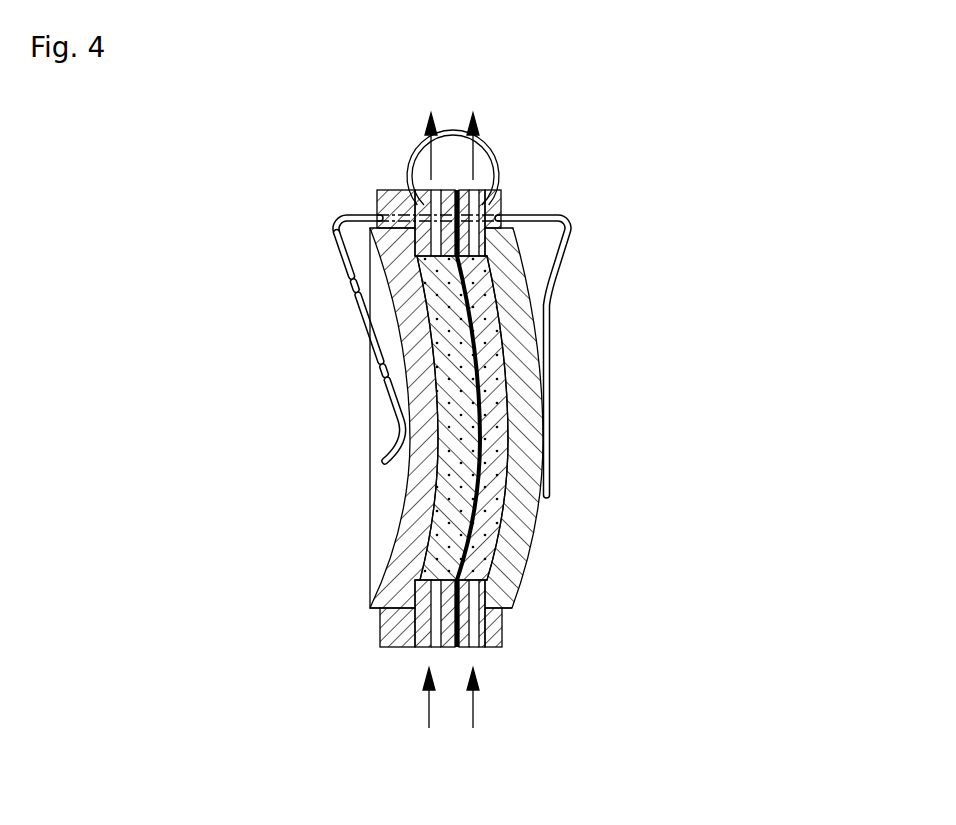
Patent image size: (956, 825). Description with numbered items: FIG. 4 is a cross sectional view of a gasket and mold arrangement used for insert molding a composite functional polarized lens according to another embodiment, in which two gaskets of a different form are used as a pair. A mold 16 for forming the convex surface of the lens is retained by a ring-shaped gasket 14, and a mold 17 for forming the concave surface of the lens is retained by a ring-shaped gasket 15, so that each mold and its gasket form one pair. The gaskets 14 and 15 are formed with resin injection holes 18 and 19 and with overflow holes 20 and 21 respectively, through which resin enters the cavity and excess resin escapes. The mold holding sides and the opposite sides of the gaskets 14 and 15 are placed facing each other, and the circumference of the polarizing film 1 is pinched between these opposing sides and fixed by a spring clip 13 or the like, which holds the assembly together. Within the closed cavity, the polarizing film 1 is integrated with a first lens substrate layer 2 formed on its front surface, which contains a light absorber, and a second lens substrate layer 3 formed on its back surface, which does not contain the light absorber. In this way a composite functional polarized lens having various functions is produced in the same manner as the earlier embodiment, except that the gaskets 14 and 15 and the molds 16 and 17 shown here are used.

The polarizing film 1 is at (486, 346).
The first lens substrate layer 2 is at (484, 408).
The second lens substrate layer 3 is at (453, 492).
The spring clip 13 is at (555, 283).
The ring-shaped gasket 14 is at (503, 630).
The ring-shaped gasket 15 is at (401, 622).
The mold 16 is at (505, 562).
The mold 17 is at (408, 540).
The resin injection hole 18 is at (479, 648).
The resin injection hole 19 is at (436, 647).
The overflow hole 20 is at (472, 190).
The overflow hole 21 is at (437, 190).